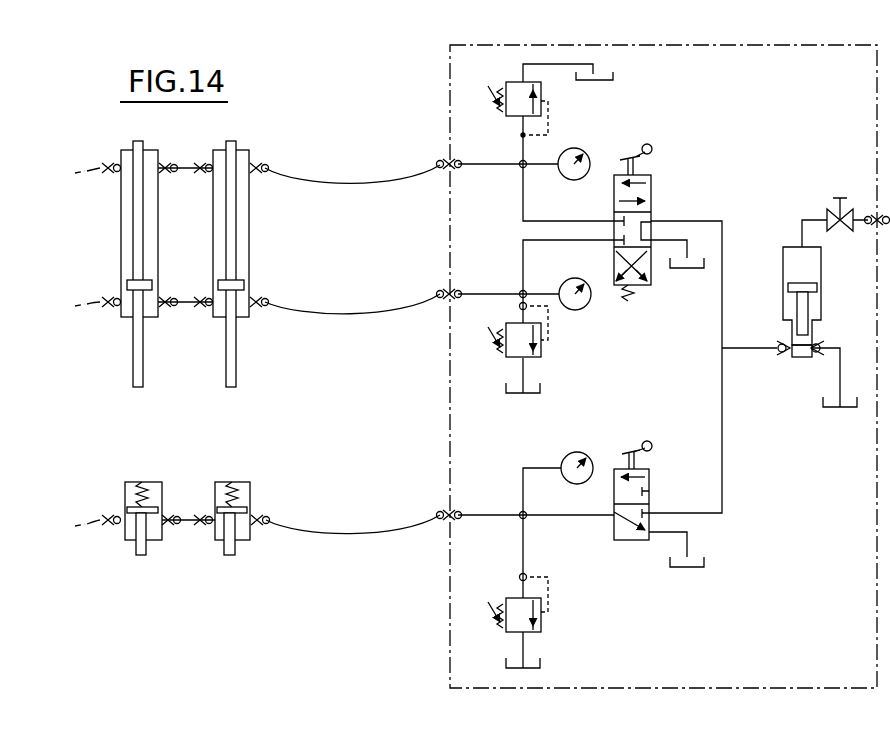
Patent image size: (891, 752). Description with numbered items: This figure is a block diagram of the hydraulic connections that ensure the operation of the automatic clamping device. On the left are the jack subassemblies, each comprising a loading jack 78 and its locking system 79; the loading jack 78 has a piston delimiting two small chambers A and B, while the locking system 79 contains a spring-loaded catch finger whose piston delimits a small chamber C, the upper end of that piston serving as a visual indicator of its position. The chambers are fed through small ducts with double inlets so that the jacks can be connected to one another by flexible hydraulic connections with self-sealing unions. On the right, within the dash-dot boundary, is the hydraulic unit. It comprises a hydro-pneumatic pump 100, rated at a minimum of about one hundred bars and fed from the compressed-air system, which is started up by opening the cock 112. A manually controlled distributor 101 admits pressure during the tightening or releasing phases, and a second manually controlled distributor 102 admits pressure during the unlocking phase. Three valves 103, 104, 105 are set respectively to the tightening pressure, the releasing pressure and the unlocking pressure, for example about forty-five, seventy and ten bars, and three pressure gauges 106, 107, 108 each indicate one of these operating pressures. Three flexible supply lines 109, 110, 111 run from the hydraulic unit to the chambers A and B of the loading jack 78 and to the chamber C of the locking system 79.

The loading jack 78 is at (150, 368).
The locking system 79 is at (171, 538).
The hydro-pneumatic pump 100 is at (783, 257).
The manually controlled distributor 101 is at (656, 200).
The manually controlled distributor 102 is at (652, 503).
The valve 103 is at (518, 121).
The valve 104 is at (515, 362).
The valve 105 is at (514, 594).
The pressure gauge 106 is at (578, 184).
The pressure gauge 107 is at (587, 311).
The pressure gauge 108 is at (576, 447).
The flexible supply line 109 is at (347, 187).
The flexible supply line 110 is at (320, 311).
The flexible supply line 111 is at (330, 534).
The cock 112 is at (828, 211).